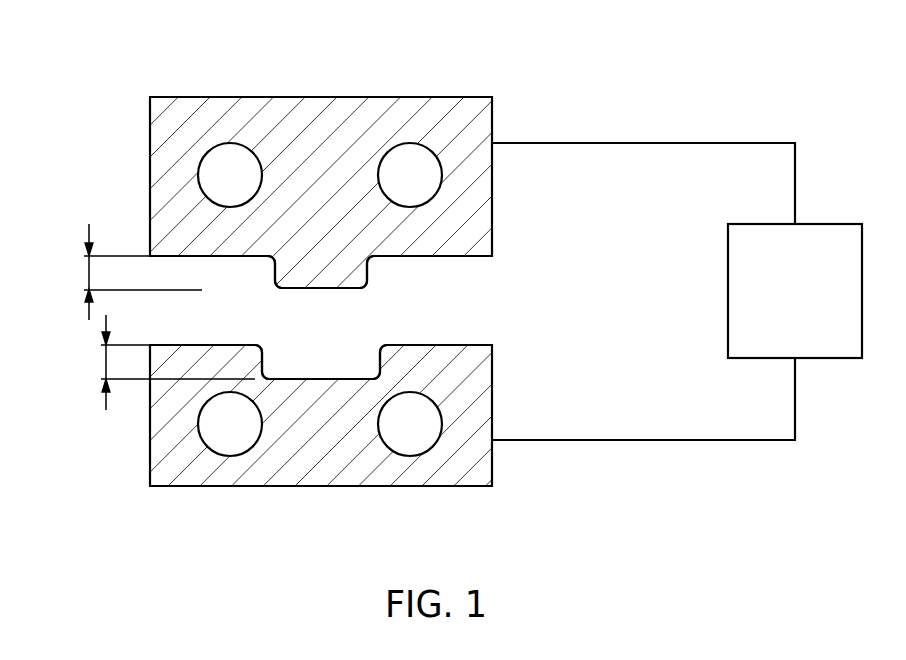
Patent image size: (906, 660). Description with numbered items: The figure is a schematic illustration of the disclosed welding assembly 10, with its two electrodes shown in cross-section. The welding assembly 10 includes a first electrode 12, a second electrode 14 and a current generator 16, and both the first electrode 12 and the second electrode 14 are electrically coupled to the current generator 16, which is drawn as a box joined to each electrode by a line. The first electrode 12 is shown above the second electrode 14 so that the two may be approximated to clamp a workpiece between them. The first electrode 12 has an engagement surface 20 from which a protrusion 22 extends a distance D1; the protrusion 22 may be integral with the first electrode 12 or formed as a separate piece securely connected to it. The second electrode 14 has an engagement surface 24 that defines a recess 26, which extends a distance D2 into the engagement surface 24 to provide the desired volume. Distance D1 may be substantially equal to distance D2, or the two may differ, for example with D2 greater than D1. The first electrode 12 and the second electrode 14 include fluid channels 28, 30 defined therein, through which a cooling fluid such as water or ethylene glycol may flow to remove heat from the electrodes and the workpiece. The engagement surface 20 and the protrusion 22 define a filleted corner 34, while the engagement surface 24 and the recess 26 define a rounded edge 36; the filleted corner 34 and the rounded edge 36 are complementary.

The welding assembly 10 is at (690, 81).
The first electrode 12 is at (312, 97).
The second electrode 14 is at (313, 486).
The current generator 16 is at (828, 224).
The engagement surface 20 is at (482, 257).
The protrusion 22 is at (355, 289).
The engagement surface 24 is at (458, 345).
The recess 26 is at (342, 379).
The fluid channels 28 is at (230, 143).
The fluid channels 30 is at (230, 456).
The filleted corner 34 is at (272, 263).
The rounded edge 36 is at (262, 347).
The distance D1 is at (89, 272).
The distance D2 is at (106, 362).